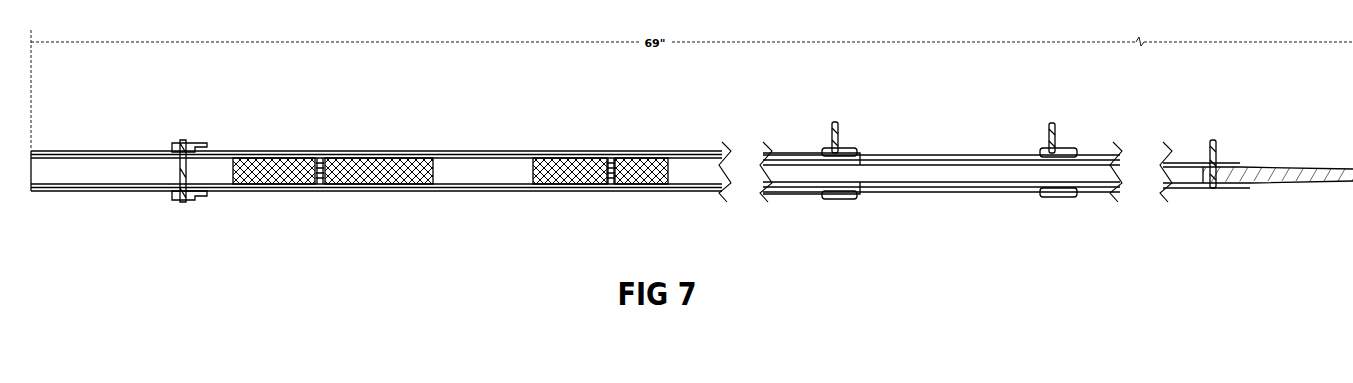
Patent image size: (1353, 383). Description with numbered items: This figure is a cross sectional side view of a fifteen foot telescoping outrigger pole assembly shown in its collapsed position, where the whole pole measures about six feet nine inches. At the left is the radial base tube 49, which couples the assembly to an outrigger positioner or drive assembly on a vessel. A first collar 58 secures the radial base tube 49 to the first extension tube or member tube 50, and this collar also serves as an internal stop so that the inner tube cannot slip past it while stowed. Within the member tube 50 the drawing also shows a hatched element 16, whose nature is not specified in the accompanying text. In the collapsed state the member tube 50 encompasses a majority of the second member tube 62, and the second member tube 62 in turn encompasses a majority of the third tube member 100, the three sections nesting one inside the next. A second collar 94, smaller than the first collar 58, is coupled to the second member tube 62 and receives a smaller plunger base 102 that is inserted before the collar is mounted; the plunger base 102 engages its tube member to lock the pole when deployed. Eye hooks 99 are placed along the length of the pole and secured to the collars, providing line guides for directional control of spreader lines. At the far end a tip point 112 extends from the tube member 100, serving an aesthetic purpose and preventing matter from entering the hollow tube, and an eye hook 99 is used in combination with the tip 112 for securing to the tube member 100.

The radial base tube 49 is at (147, 155).
The member tube 50 is at (163, 190).
The foam insert 16 is at (247, 158).
The plunger base 102 is at (547, 167).
The eye hooks 99 is at (840, 125).
The first collar 58 is at (840, 193).
The second member tube 62 is at (935, 187).
The second collar 94 is at (1058, 195).
The tube member 100 is at (1183, 185).
The tip point 112 is at (1323, 177).